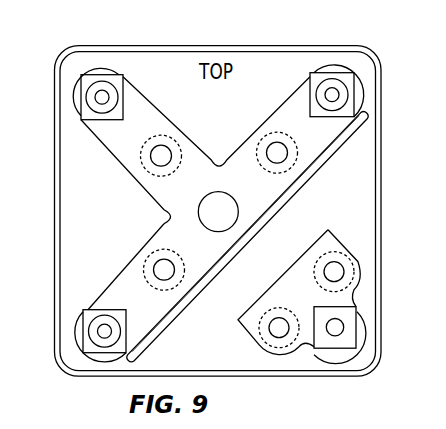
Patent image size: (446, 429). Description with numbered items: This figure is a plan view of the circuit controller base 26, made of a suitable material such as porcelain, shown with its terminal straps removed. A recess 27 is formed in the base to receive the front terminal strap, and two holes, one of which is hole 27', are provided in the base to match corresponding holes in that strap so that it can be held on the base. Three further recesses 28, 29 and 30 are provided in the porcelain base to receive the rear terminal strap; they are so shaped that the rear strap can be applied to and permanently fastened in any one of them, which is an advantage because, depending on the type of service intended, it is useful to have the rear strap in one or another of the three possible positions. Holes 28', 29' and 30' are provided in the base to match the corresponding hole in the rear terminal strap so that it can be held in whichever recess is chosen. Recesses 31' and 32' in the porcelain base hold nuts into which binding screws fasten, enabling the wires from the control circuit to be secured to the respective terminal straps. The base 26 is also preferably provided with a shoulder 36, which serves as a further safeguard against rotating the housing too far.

The base 26 is at (355, 221).
The recess 27 is at (335, 292).
The hole 27' is at (374, 272).
The recess 28 is at (216, 90).
The hole 28' is at (262, 132).
The recess 29 is at (93, 172).
The hole 29' is at (136, 174).
The recess 30 is at (121, 267).
The hole 30' is at (146, 255).
The recess 31' is at (344, 360).
The recess 32' is at (244, 216).
The shoulder 36 is at (318, 164).